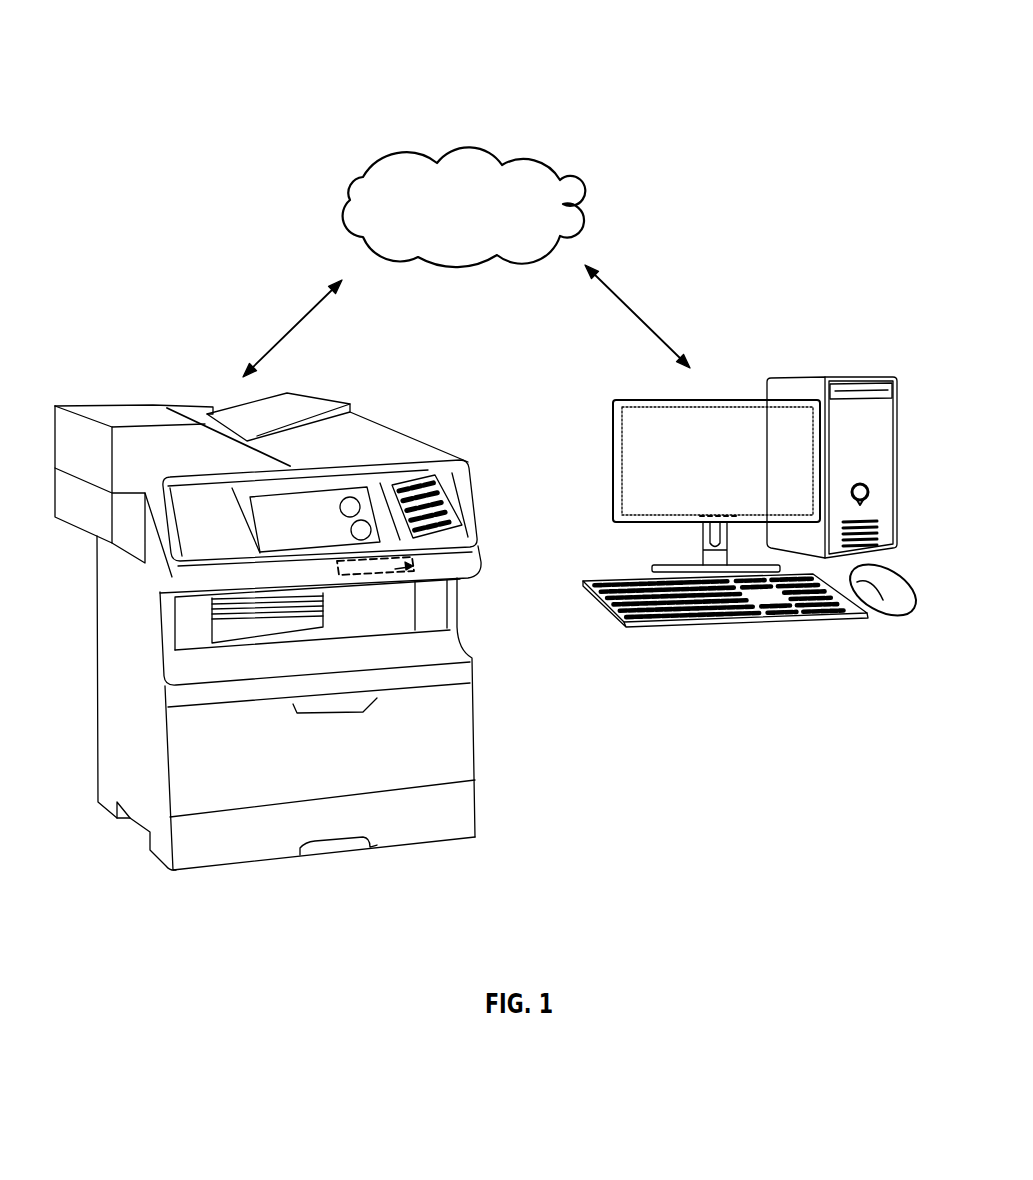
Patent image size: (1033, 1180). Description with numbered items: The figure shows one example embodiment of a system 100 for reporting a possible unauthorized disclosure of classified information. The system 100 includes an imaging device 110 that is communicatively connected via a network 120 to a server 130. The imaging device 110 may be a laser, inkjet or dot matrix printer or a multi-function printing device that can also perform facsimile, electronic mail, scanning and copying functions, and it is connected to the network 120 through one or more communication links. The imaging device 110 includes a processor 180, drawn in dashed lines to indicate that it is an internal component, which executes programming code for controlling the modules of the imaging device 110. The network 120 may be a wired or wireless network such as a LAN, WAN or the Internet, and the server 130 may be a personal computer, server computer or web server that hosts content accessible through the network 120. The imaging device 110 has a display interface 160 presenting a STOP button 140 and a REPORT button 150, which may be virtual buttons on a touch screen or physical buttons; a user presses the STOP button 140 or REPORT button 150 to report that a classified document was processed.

The system 100 is at (547, 72).
The imaging device 110 is at (111, 410).
The network 120 is at (454, 236).
The server 130 is at (830, 374).
The STOP button 140 is at (352, 497).
The REPORT button 150 is at (364, 521).
The display interface 160 is at (272, 540).
The processor 180 is at (414, 567).